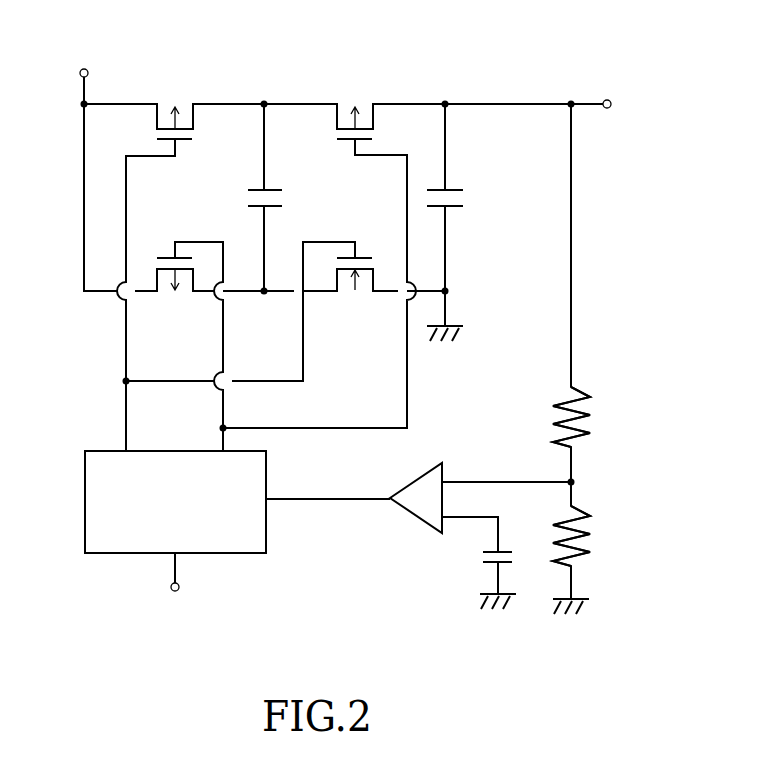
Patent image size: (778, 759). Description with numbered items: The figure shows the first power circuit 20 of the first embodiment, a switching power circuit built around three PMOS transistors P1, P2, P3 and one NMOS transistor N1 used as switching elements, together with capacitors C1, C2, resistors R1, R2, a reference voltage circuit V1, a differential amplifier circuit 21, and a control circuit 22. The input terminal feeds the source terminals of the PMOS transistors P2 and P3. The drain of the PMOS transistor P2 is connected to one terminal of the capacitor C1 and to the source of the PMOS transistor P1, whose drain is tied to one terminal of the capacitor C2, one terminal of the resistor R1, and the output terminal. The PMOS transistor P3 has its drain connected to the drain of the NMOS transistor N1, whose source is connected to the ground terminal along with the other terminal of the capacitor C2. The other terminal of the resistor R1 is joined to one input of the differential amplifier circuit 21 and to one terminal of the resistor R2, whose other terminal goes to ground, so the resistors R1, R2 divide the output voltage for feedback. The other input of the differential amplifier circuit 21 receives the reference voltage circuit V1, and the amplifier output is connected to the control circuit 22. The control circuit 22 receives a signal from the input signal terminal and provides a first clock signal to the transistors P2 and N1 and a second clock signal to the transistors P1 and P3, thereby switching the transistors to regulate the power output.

The first power circuit 20 is at (552, 46).
The differential amplifier circuit 21 is at (418, 522).
The control circuit 22 is at (83, 542).
The PMOS transistor P1 is at (358, 104).
The PMOS transistor P2 is at (178, 103).
The PMOS transistor P3 is at (177, 295).
The NMOS transistor N1 is at (358, 295).
The capacitor C1 is at (276, 195).
The capacitor C2 is at (462, 196).
The resistor R1 is at (582, 390).
The resistor R2 is at (582, 508).
The reference voltage circuit V1 is at (483, 553).